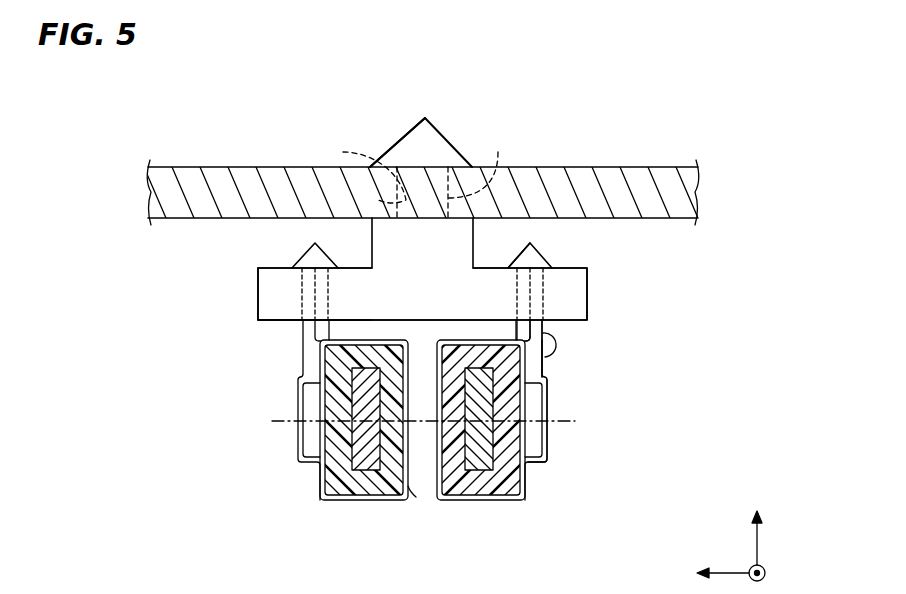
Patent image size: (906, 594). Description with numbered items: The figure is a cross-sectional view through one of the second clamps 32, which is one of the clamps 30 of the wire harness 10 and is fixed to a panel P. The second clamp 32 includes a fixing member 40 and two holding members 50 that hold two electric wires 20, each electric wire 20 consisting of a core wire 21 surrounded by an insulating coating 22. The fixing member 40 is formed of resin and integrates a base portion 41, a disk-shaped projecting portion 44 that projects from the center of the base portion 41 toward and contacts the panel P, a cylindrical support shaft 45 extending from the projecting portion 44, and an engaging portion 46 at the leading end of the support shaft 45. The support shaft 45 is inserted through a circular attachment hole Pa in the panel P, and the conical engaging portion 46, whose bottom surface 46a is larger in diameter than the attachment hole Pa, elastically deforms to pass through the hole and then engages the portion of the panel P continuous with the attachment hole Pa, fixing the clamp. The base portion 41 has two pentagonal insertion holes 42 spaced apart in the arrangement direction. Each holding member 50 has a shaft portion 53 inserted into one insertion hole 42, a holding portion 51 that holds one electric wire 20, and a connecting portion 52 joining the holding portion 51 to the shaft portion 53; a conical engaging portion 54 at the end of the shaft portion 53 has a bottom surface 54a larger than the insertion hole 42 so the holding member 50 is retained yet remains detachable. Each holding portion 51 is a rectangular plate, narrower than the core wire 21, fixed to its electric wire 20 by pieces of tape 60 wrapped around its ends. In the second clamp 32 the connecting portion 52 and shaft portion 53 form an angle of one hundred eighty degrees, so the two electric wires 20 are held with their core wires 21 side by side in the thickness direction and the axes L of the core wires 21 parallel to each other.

The coil unit 10 is at (479, 334).
The electric wire 20 is at (422, 443).
The core wire 21 is at (477, 468).
The insulating coating 22 is at (505, 482).
The clamp 30 is at (482, 276).
The second clamp 32 is at (596, 257).
The fixing member 40 is at (401, 201).
The base portion 41 is at (262, 292).
The insertion hole 42 is at (324, 292).
The projecting portion 44 is at (375, 234).
The support shaft 45 is at (492, 169).
The engaging portion 46 is at (428, 126).
The bottom surface 46a is at (391, 171).
The holding member 50 is at (427, 396).
The holding portion 51 is at (534, 398).
The connecting portion 52 is at (534, 367).
The shaft portion 53 is at (540, 326).
The engaging portion 54 is at (535, 247).
The bottom surface 54a is at (509, 272).
The tape 60 is at (412, 482).
The panel P is at (670, 180).
The attachment hole Pa is at (359, 170).
The axis L is at (272, 421).